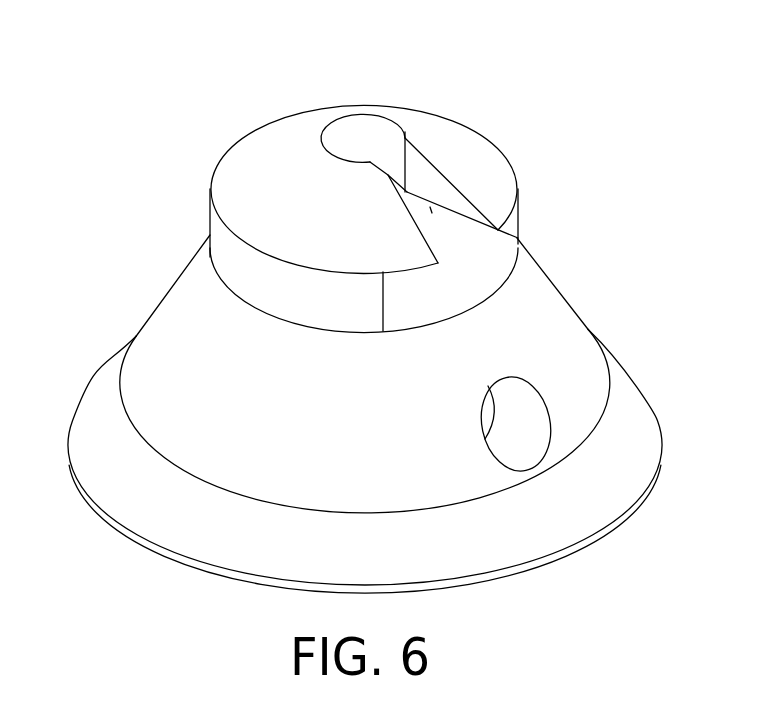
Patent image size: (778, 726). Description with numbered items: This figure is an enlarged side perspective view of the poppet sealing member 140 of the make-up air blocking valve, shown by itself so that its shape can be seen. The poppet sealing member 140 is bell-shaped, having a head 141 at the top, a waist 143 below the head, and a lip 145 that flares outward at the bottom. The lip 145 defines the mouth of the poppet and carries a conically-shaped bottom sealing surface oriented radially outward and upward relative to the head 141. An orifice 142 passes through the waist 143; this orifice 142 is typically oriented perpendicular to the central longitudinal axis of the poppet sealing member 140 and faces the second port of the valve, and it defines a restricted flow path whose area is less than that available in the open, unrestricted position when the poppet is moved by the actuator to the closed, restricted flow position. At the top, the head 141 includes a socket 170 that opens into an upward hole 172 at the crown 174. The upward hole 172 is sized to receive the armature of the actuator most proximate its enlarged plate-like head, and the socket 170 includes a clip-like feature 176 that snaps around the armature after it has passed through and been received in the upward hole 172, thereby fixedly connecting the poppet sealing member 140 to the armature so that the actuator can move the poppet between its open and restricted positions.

The poppet sealing member 140 is at (648, 207).
The head 141 is at (212, 226).
The orifice 142 is at (548, 410).
The waist 143 is at (188, 318).
The lip 145 is at (144, 512).
The socket 170 is at (502, 266).
The upward hole 172 is at (390, 144).
The crown 174 is at (335, 119).
The clip-like feature 176 is at (458, 193).